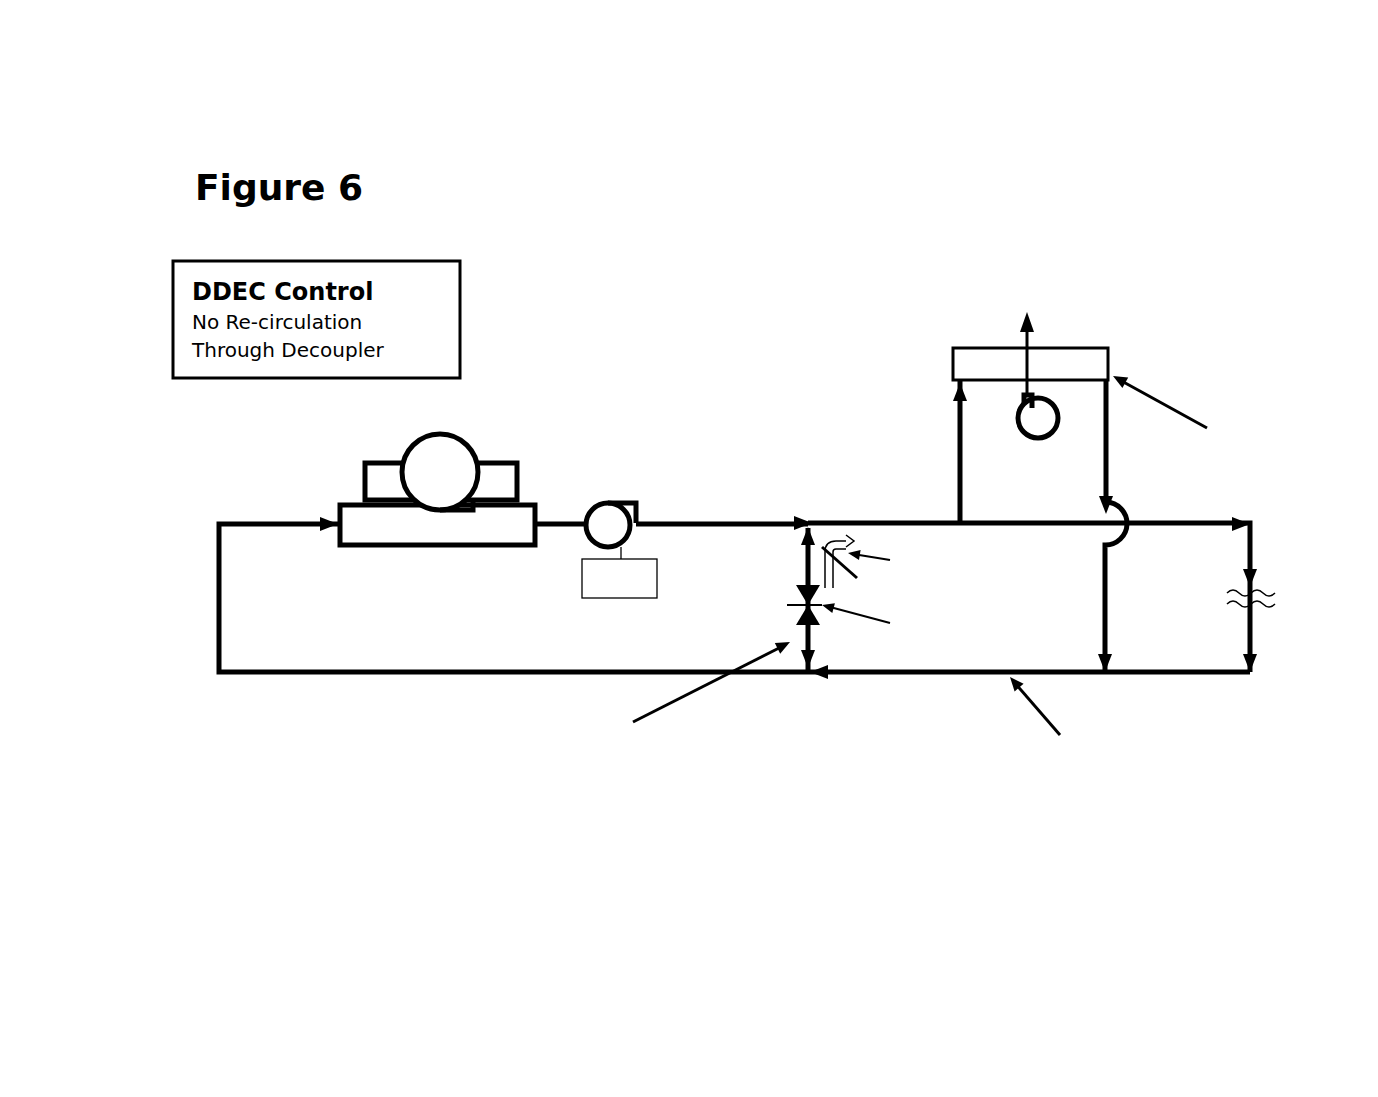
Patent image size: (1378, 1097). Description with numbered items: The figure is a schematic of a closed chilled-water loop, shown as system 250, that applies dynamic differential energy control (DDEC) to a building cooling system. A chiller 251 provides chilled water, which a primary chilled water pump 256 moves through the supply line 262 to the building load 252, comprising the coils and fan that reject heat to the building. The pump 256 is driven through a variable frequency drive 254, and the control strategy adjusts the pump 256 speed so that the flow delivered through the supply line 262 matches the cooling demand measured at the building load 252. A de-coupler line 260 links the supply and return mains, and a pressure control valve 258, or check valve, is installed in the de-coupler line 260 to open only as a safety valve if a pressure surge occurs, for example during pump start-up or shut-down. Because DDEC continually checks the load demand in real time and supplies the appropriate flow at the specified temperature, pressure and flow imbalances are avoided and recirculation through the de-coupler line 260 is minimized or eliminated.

The system 250 is at (1248, 483).
The chiller 251 is at (402, 473).
The building load 252 is at (1053, 342).
The variable frequency drive 254 is at (593, 572).
The primary chilled water pump 256 is at (600, 498).
The pressure control valve 258 is at (814, 607).
The de-coupler line 260 is at (790, 640).
The supply line 262 is at (765, 520).